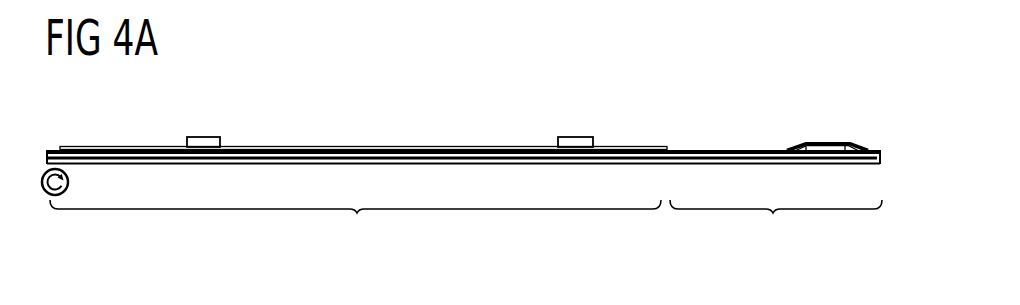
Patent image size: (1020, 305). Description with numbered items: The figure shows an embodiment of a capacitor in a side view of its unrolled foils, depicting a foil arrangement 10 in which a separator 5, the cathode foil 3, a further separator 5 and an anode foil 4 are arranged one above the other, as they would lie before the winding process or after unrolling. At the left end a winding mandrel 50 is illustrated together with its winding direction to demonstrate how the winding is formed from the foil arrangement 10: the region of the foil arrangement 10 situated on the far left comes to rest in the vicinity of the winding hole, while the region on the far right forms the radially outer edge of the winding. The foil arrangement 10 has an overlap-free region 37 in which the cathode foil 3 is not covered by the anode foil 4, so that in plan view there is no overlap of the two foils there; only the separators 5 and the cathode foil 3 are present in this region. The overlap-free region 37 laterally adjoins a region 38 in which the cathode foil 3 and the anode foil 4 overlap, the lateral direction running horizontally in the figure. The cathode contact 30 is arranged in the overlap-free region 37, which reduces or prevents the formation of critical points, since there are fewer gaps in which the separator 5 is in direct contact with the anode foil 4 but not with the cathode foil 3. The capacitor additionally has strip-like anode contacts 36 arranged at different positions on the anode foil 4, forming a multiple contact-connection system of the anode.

The foil arrangement 10 is at (752, 96).
The cathode foil 3 is at (390, 158).
The anode foil 4 is at (262, 151).
The separator 5 is at (340, 165).
The cathode contact 30 is at (823, 150).
The anode contacts 36 is at (203, 141).
The overlap-free region 37 is at (776, 227).
The overlap region 38 is at (355, 226).
The winding mandrel 50 is at (69, 184).